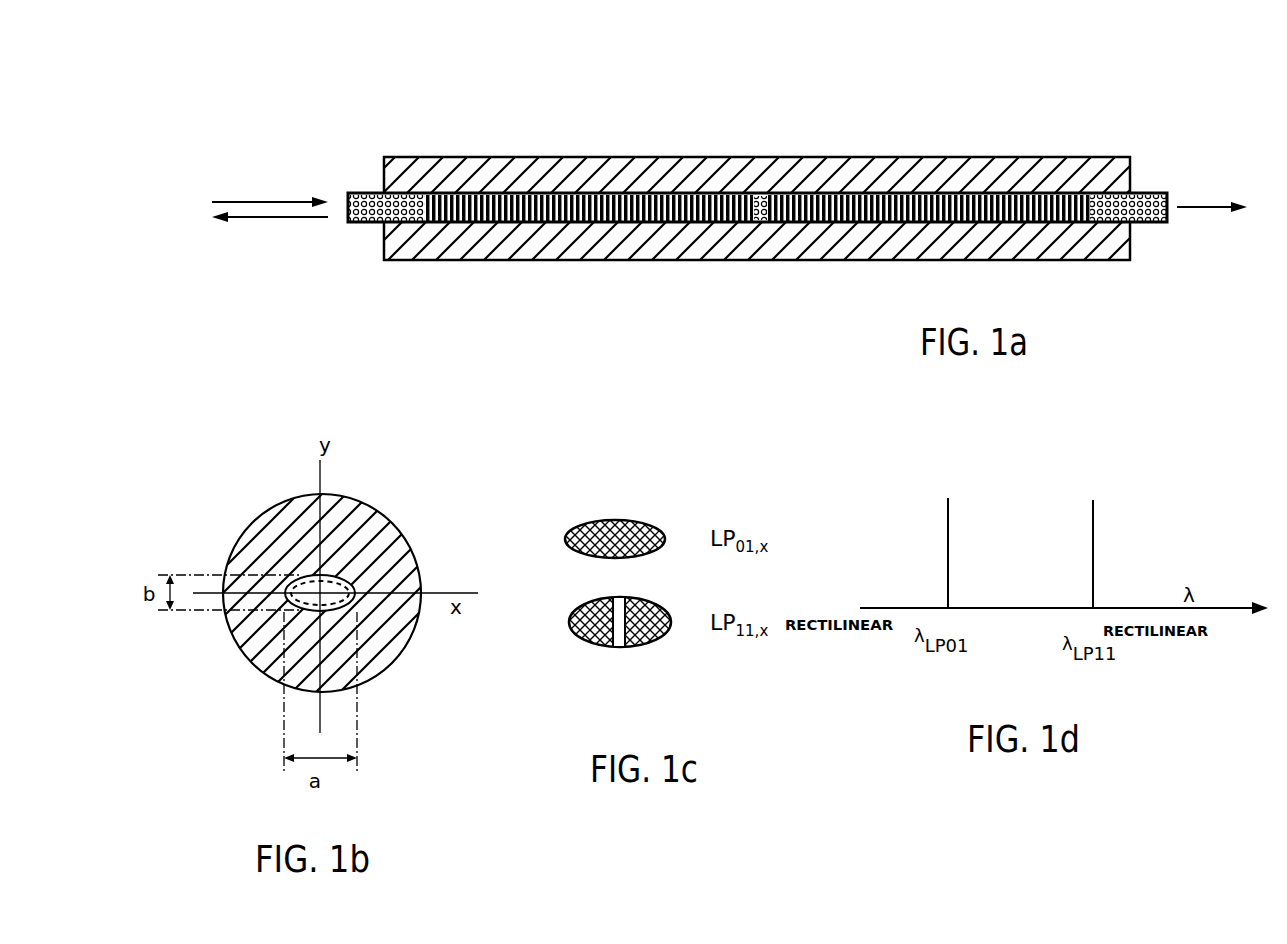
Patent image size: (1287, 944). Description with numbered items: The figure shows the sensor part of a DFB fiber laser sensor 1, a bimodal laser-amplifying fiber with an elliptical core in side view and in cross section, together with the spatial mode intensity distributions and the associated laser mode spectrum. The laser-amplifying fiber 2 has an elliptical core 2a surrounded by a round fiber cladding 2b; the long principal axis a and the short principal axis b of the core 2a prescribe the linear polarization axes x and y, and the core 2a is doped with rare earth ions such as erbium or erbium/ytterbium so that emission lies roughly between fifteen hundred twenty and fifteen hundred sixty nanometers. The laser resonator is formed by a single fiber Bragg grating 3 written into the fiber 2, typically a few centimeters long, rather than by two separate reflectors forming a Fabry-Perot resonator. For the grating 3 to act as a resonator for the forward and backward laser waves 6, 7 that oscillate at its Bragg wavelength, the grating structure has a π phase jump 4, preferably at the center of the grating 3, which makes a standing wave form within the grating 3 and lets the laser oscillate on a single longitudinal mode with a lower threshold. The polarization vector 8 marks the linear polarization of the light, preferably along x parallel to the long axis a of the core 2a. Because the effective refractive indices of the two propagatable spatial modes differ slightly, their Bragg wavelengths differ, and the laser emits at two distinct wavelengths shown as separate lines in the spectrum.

In FIG. 1A, the fiber laser sensor 1 is at (781, 100).
In FIG. 1B, the fiber laser sensor 1 is at (288, 548).
In FIG. 1A, the laser-amplifying fiber 2 is at (757, 206).
In FIG. 1B, the laser-amplifying fiber 2 is at (296, 560).
In FIG. 1A, the elliptical fiber core 2a is at (407, 224).
In FIG. 1B, the elliptical fiber core 2a is at (302, 578).
In FIG. 1A, the fiber cladding 2b is at (608, 235).
In FIG. 1B, the fiber cladding 2b is at (375, 525).
In FIG. 1A, the fiber Bragg grating resonator 3 is at (833, 195).
In FIG. 1A, the π phase jump 4 is at (760, 222).
In FIG. 1A, the forward laser emission 6 is at (1200, 207).
In FIG. 1A, the backward laser emission 7 is at (285, 220).
In FIG. 1A, the polarization vector 8 is at (273, 202).
In FIG. 1C, the polarization vector 8 is at (612, 521).